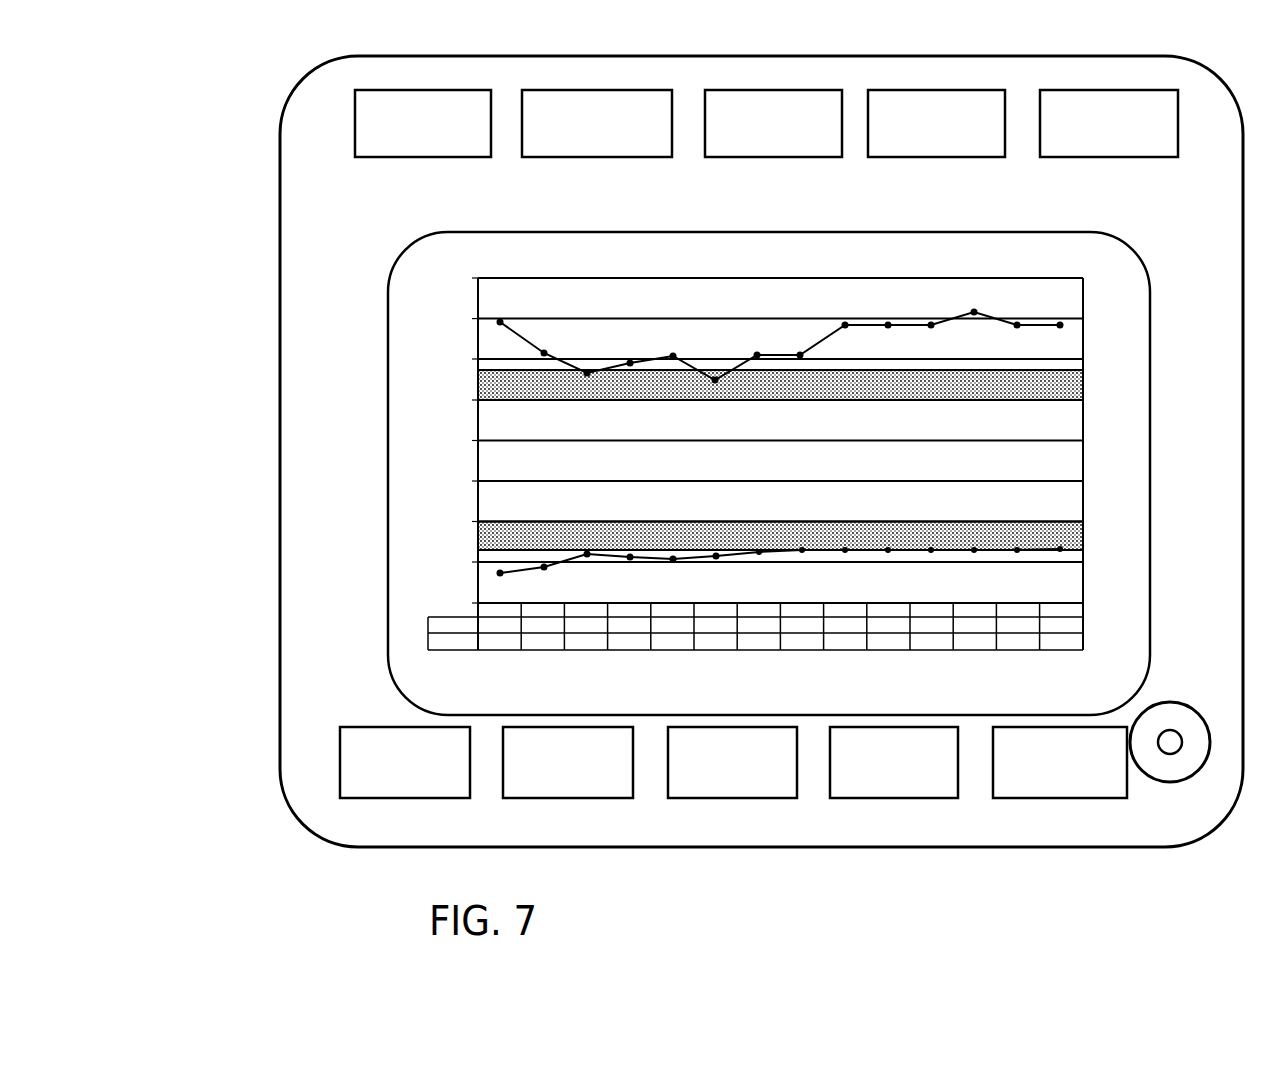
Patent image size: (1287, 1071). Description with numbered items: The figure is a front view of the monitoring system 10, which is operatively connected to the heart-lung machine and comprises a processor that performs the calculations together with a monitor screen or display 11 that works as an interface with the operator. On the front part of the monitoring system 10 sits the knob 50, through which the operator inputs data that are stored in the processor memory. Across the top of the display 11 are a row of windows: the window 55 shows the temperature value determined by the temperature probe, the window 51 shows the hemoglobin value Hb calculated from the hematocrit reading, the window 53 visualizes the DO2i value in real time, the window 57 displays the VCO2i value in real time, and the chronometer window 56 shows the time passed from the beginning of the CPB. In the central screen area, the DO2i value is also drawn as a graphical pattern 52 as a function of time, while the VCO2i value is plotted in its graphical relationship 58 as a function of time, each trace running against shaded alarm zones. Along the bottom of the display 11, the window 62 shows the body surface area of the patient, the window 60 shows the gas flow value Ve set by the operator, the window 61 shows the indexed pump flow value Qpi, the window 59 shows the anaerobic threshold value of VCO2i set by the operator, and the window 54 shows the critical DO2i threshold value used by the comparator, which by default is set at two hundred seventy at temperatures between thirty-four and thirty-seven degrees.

The monitoring system 10 is at (239, 372).
The display 11 is at (277, 141).
The knob 50 is at (1198, 765).
The window 51 is at (553, 106).
The graphical pattern 52 is at (655, 340).
The window 53 is at (818, 104).
The window 54 is at (1112, 782).
The window 55 is at (432, 100).
The chronometer window 56 is at (1072, 102).
The window 57 is at (975, 109).
The graphical relationship 58 is at (672, 568).
The window 59 is at (844, 774).
The window 60 is at (602, 786).
The window 61 is at (735, 786).
The window 62 is at (356, 760).